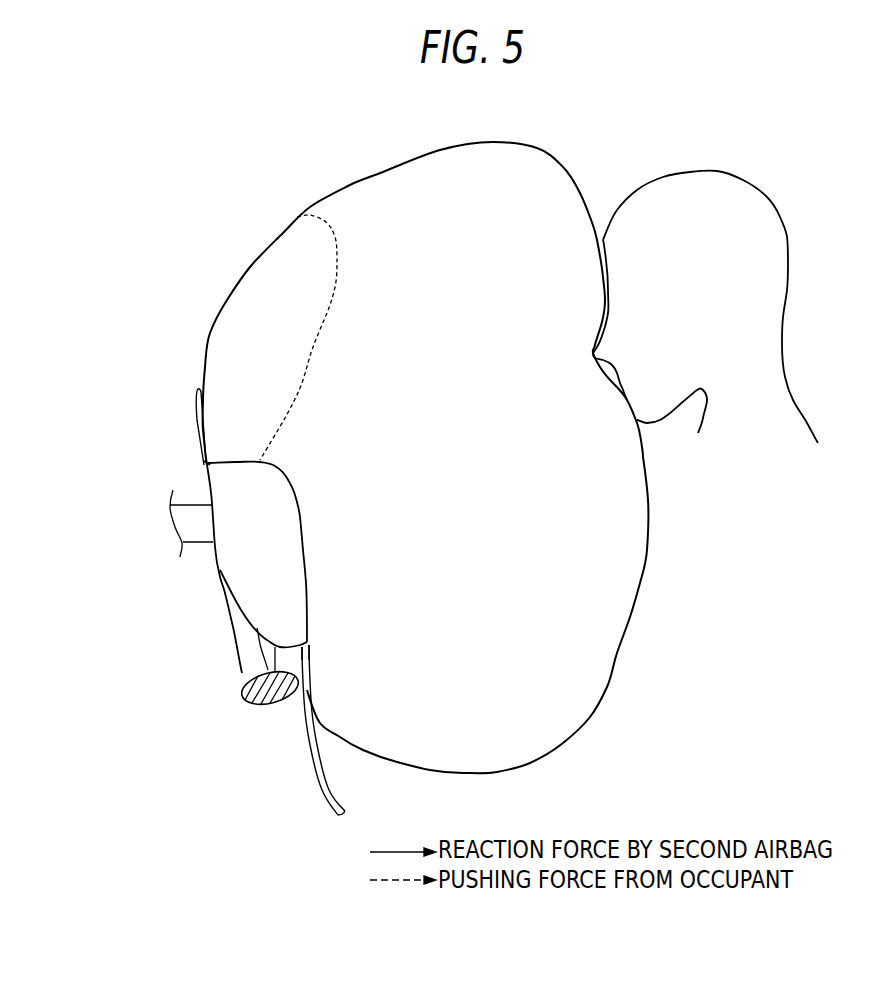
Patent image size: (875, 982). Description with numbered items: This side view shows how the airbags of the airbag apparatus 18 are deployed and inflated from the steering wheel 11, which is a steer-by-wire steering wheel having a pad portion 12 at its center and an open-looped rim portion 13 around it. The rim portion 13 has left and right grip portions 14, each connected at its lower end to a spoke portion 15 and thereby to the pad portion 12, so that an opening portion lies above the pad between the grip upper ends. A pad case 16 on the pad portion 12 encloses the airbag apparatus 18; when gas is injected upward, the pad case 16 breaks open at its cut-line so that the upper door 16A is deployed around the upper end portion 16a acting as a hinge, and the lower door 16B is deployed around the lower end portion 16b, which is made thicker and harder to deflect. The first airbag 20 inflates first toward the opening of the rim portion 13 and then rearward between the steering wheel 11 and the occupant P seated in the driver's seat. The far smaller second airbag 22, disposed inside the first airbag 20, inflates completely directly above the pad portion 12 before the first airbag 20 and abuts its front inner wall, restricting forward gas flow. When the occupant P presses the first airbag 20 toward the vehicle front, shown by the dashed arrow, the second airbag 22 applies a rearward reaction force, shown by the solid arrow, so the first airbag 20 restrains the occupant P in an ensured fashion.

The steering wheel 11 is at (621, 153).
The pad portion 12 is at (224, 564).
The rim portion 13 is at (255, 653).
The grip portion 14 is at (286, 648).
The spoke portion 15 is at (266, 693).
The pad case 16 is at (250, 602).
The upper door 16A is at (201, 393).
The lower door 16B is at (316, 760).
The upper end portion 16a is at (206, 461).
The lower end portion 16b is at (305, 647).
The airbag apparatus 18 is at (215, 205).
The first airbag 20 is at (607, 687).
The second airbag 22 is at (337, 237).
The occupant P is at (770, 233).